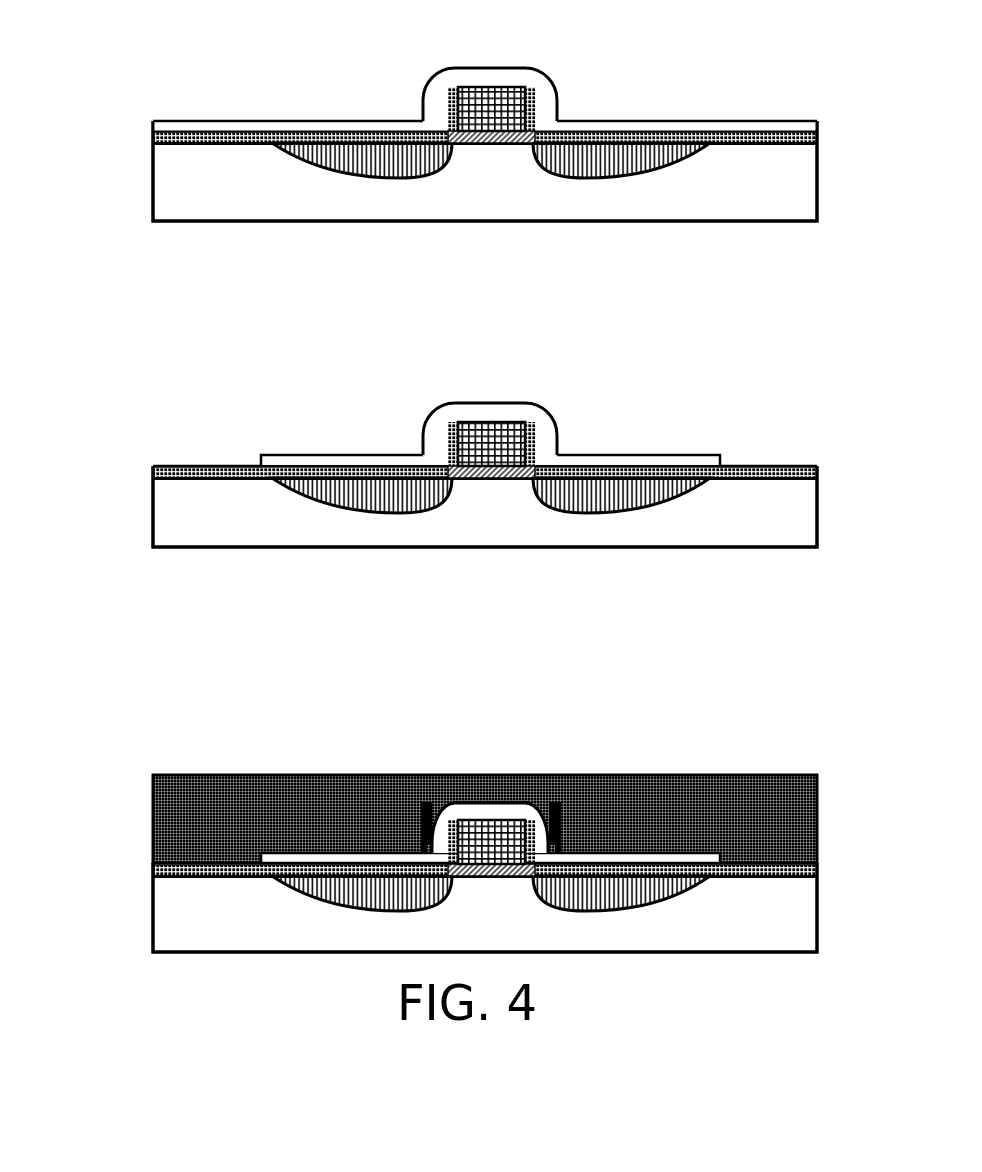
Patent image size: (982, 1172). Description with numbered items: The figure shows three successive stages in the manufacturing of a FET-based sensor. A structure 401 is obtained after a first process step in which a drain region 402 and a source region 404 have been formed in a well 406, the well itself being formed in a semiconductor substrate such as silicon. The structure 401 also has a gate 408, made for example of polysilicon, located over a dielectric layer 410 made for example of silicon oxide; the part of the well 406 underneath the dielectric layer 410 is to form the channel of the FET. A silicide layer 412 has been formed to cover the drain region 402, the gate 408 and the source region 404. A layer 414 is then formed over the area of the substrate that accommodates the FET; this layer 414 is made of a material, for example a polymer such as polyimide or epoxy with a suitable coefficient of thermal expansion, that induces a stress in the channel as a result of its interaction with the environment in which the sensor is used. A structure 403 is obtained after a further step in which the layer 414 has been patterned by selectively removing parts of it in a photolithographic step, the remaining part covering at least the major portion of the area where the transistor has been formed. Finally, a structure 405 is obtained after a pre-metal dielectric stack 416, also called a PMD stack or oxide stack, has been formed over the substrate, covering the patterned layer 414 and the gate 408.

The structure 401 is at (97, 218).
The drain region 402 is at (303, 150).
The structure 403 is at (97, 544).
The source region 404 is at (673, 150).
The structure 405 is at (97, 952).
The well 406 is at (788, 203).
The gate 408 is at (507, 107).
The dielectric layer 410 is at (510, 143).
The silicide layer 412 is at (460, 73).
The layer 414 is at (173, 127).
The pre-metal dielectric stack 416 is at (173, 828).